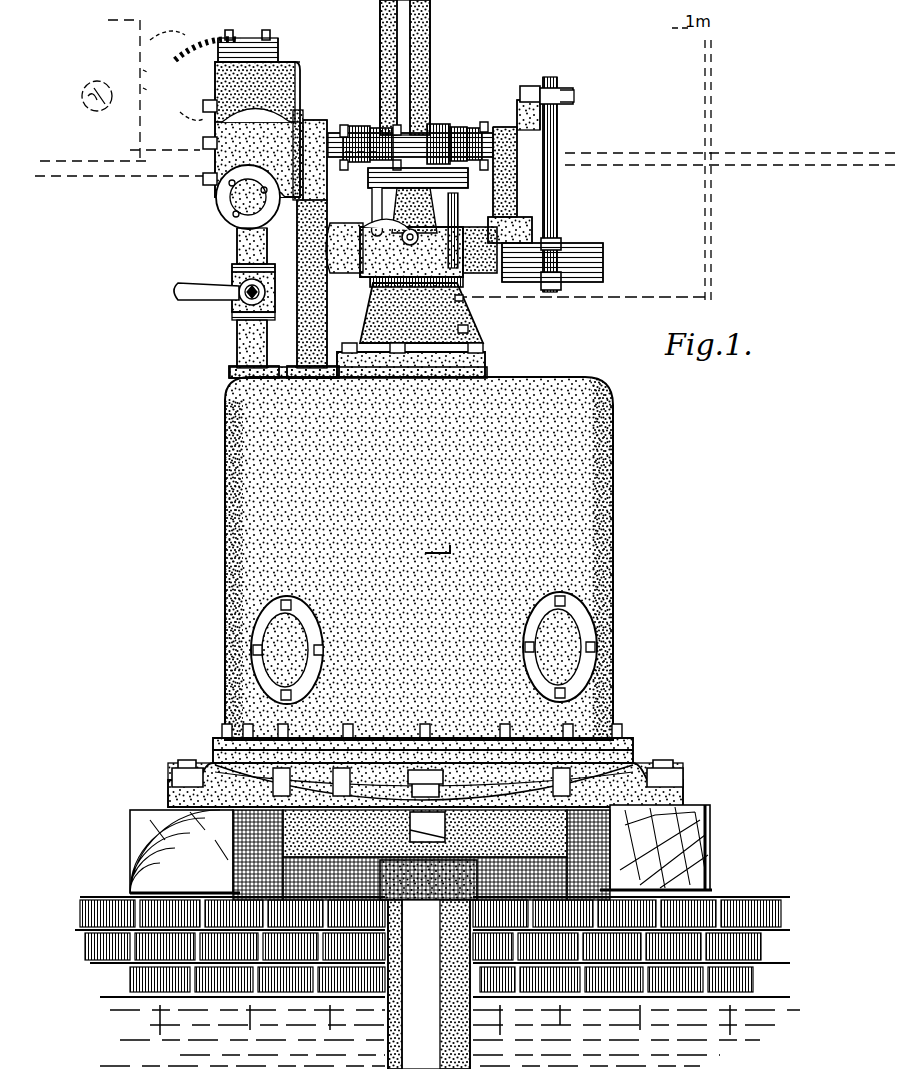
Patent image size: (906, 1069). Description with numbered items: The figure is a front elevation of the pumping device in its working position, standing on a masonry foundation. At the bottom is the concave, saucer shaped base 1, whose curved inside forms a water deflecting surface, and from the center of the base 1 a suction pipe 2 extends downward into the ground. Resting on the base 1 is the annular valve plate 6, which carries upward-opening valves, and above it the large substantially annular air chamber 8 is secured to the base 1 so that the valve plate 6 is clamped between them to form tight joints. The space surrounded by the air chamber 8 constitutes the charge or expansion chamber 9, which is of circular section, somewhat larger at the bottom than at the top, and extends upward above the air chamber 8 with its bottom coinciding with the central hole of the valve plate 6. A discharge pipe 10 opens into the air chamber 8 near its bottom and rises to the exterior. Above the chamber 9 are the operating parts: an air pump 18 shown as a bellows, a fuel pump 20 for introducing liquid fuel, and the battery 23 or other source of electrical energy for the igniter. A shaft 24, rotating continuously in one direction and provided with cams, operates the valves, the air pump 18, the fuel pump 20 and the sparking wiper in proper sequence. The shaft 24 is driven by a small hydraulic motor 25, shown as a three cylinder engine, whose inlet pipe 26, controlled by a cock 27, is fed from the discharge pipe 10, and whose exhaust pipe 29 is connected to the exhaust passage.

The base 1 is at (690, 797).
The suction pipe 2 is at (429, 984).
The valve plate 6 is at (210, 760).
The air chamber 8 is at (613, 560).
The charge or expansion chamber 9 is at (493, 365).
The discharge pipe 10 is at (433, 82).
The air pump 18 is at (603, 268).
The fuel pump 20 is at (411, 227).
The battery 23 is at (137, 98).
The shaft 24 is at (338, 135).
The hydraulic motor 25 is at (243, 50).
The inlet pipe 26 is at (237, 250).
The cock 27 is at (232, 322).
The exhaust pipe 29 is at (340, 312).